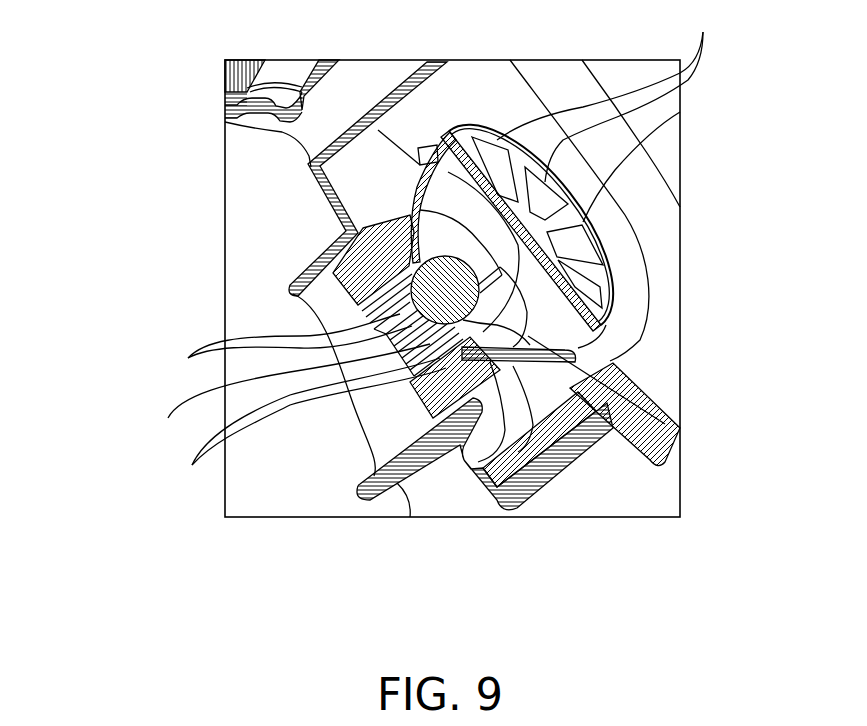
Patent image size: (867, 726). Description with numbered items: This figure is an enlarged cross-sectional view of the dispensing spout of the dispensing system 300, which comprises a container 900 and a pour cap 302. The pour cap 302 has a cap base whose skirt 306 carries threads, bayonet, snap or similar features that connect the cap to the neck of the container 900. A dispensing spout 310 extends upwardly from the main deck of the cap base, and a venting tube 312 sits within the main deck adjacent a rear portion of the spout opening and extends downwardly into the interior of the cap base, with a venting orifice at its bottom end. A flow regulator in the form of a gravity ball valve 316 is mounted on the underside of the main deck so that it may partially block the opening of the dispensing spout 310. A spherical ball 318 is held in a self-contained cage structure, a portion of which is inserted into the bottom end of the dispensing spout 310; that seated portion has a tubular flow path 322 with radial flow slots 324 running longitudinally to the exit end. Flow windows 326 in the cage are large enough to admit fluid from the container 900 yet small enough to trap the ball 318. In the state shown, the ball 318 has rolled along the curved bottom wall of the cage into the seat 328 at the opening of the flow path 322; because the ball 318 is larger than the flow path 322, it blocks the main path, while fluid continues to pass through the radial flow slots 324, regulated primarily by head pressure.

The dispensing system 300 is at (183, 68).
The pour cap 302 is at (305, 187).
The skirt 306 is at (567, 466).
The dispensing spout 310 is at (410, 517).
The venting tube 312 is at (310, 133).
The gravity ball valve 316 is at (617, 278).
The spherical ball 318 is at (440, 270).
The tubular flow path 322 is at (286, 395).
The radial flow slots 324 is at (301, 407).
The flow windows 326 is at (612, 94).
The seat 328 is at (681, 430).
The container 900 is at (660, 366).